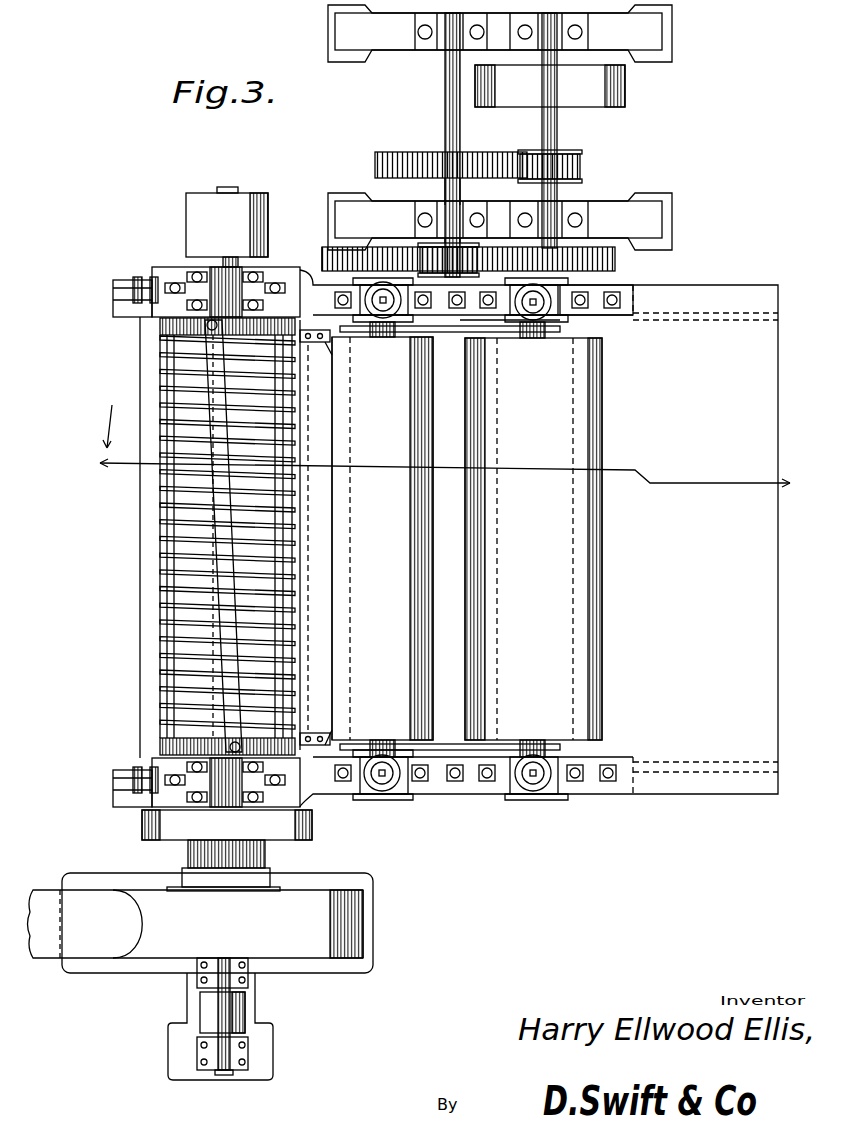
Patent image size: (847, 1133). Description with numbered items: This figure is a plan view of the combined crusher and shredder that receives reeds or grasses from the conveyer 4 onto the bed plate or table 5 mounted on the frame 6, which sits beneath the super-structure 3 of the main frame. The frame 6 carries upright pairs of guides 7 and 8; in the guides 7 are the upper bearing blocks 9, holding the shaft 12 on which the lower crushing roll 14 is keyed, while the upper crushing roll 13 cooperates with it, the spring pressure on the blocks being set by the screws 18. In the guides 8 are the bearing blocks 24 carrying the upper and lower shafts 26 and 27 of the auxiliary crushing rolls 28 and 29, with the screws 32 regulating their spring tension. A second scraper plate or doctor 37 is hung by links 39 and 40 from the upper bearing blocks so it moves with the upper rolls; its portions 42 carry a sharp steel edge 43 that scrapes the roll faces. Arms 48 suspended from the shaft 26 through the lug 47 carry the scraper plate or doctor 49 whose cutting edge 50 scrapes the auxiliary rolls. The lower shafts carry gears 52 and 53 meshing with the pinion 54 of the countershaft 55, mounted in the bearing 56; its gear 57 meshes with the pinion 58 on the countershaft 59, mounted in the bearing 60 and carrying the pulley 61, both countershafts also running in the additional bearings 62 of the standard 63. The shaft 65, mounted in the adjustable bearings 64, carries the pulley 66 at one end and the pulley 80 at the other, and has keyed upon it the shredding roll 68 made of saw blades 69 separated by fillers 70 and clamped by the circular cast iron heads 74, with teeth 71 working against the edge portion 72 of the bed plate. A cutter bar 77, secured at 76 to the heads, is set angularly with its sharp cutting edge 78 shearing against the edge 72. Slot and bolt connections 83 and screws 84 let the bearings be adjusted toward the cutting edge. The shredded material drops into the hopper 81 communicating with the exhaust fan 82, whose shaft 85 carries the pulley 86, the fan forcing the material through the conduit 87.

The super-structure 3 is at (526, 322).
The conveyer 4 is at (445, 450).
The bed plate or table 5 is at (720, 590).
The frame 6 is at (606, 222).
The guides 7 is at (477, 532).
The guides 8 is at (313, 290).
The upper bearing blocks 9 is at (367, 355).
The shaft 12 is at (562, 268).
The upper crushing roll 13 is at (600, 445).
The lower crushing roll 14 is at (604, 528).
The screws 18 is at (505, 298).
The bearing blocks 24 is at (570, 320).
The upper shaft 26 is at (375, 790).
The lower shaft 27 is at (375, 283).
The auxiliary crushing roll 28 is at (335, 428).
The auxiliary crushing roll 29 is at (315, 450).
The screws 32 is at (385, 318).
The second scraper plate or doctor 37 is at (396, 538).
The link 39 is at (498, 332).
The link 40 is at (440, 333).
The corresponding portions 42 is at (490, 568).
The sharp steel edge 43 is at (480, 520).
The lug 47 is at (335, 742).
The arms 48 is at (345, 342).
The scraper plate or doctor 49 is at (317, 553).
The sharp steel cutting edge 50 is at (350, 403).
The gear 52 is at (600, 258).
The gear 53 is at (322, 258).
The pinion 54 is at (437, 246).
The countershaft 55 is at (450, 197).
The bearing 56 is at (458, 222).
The gear 57 is at (433, 160).
The pinion 58 is at (568, 165).
The countershaft 59 is at (558, 125).
The bearing 60 is at (548, 220).
The pulley 61 is at (622, 85).
The additional bearings 62 is at (560, 26).
The standard 63 is at (635, 32).
The bearings 64 is at (222, 280).
The shaft 65 is at (220, 262).
The pulley 66 is at (246, 205).
The shredding roll 68 is at (192, 498).
The saw blades 69 is at (172, 470).
The fillers 70 is at (192, 530).
The teeth 71 is at (160, 393).
The edge portion 72 is at (305, 518).
The circular cast iron heads 74 is at (265, 320).
The bolted connection 76 is at (207, 326).
The cutter bar 77 is at (225, 600).
The sharp cutting edge 78 is at (240, 570).
The pulley 80 is at (268, 845).
The hopper 81 is at (310, 650).
The exhaust fan 82 is at (315, 935).
The slot and bolt connections 83 is at (172, 286).
The screws 84 is at (125, 296).
The shaft 85 is at (258, 978).
The pulley 86 is at (246, 1012).
The conduit 87 is at (196, 924).